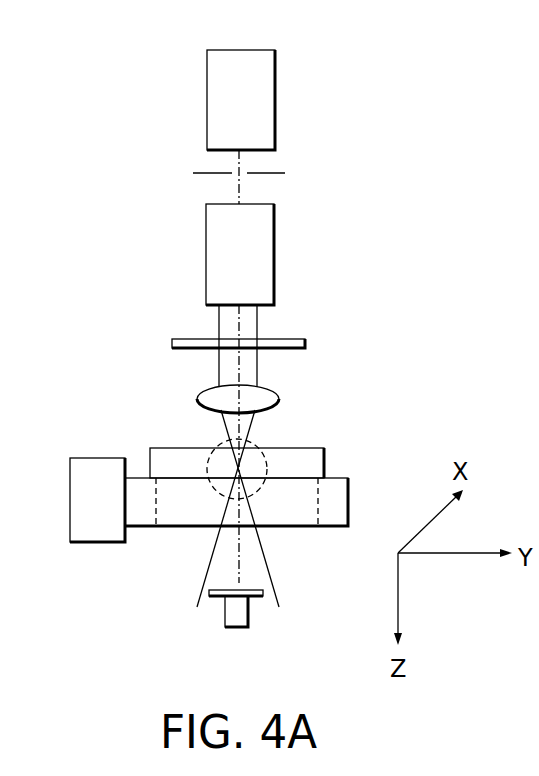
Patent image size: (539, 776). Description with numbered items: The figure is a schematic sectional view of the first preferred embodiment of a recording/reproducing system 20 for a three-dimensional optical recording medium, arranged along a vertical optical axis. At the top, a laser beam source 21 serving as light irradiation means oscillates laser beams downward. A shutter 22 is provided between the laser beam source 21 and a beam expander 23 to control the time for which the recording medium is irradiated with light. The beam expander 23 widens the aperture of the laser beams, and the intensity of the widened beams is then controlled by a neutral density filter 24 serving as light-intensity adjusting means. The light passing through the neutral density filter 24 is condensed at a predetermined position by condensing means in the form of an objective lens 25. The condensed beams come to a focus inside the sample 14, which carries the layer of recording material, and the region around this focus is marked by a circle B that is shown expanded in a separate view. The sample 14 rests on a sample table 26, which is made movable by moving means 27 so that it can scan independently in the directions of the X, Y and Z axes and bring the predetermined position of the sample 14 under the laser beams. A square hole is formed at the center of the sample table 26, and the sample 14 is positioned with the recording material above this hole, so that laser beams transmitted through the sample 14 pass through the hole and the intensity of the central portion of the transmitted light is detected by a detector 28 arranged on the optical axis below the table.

The recording/reproducing system 20 is at (326, 98).
The laser beam source 21 is at (207, 80).
The shutter 22 is at (285, 173).
The beam expander 23 is at (206, 282).
The neutral density filter 24 is at (305, 348).
The objective lens 25 is at (197, 402).
The circle B is at (260, 440).
The sample 14 is at (324, 458).
The sample table 26 is at (348, 503).
The moving means 27 is at (70, 492).
The detector 28 is at (249, 617).